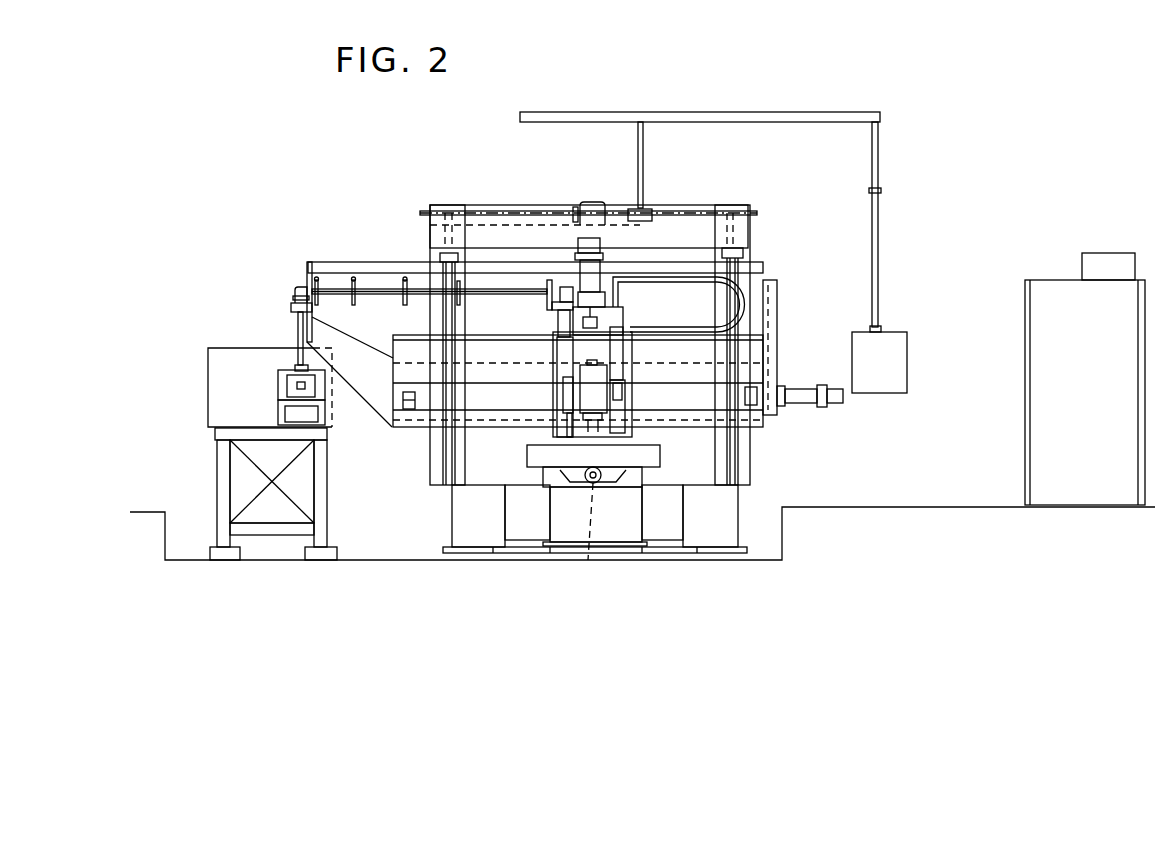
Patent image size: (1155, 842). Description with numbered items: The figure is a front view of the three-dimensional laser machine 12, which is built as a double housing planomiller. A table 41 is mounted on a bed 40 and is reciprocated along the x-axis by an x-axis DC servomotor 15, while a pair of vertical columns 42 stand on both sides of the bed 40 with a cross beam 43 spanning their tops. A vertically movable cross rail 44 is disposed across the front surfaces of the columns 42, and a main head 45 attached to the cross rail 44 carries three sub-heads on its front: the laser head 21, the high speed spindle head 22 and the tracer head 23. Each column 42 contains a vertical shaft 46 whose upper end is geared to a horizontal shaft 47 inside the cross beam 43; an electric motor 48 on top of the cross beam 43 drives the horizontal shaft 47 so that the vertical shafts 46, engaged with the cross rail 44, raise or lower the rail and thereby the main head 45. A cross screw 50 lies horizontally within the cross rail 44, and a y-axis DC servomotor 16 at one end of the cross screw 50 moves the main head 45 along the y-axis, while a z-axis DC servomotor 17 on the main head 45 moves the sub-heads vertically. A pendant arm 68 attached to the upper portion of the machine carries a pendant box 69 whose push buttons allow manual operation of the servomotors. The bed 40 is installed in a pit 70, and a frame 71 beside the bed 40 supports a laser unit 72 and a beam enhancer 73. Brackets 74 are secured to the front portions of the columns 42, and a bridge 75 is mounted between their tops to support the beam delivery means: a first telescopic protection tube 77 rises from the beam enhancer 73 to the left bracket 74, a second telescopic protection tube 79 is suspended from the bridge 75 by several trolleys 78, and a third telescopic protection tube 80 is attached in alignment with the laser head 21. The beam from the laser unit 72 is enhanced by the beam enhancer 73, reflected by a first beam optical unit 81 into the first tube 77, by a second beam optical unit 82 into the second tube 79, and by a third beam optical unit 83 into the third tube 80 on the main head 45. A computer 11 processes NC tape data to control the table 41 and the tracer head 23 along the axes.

The computer 11 is at (1047, 285).
The three-dimensional laser machine 12 is at (437, 200).
The x-axis DC servomotor 15 is at (585, 534).
The y-axis DC servomotor 16 is at (843, 405).
The z-axis DC servomotor 17 is at (600, 295).
The laser head 21 is at (563, 425).
The high speed spindle head 22 is at (600, 405).
The tracer head 23 is at (620, 415).
The bed 40 is at (622, 528).
The table 41 is at (527, 458).
The vertical columns 42 is at (437, 470).
The cross beam 43 is at (505, 235).
The cross rail 44 is at (760, 366).
The main head 45 is at (642, 332).
The vertical shaft 46 is at (450, 480).
The horizontal shaft 47 is at (545, 214).
The electric motor 48 is at (594, 200).
The cross screw 50 is at (415, 402).
The pendant arm 68 is at (792, 110).
The pendant box 69 is at (905, 362).
The pit 70 is at (775, 528).
The frame 71 is at (217, 480).
The laser unit 72 is at (208, 395).
The beam enhancer 73 is at (292, 380).
The brackets 74 is at (365, 405).
The bridge 75 is at (345, 266).
The first telescopic protection tube 77 is at (297, 345).
The trolleys 78 is at (365, 289).
The second telescopic protection tube 79 is at (375, 295).
The third telescopic protection tube 80 is at (553, 325).
The first beam optical unit 81 is at (280, 413).
The second beam optical unit 82 is at (297, 288).
The third beam optical unit 83 is at (563, 288).